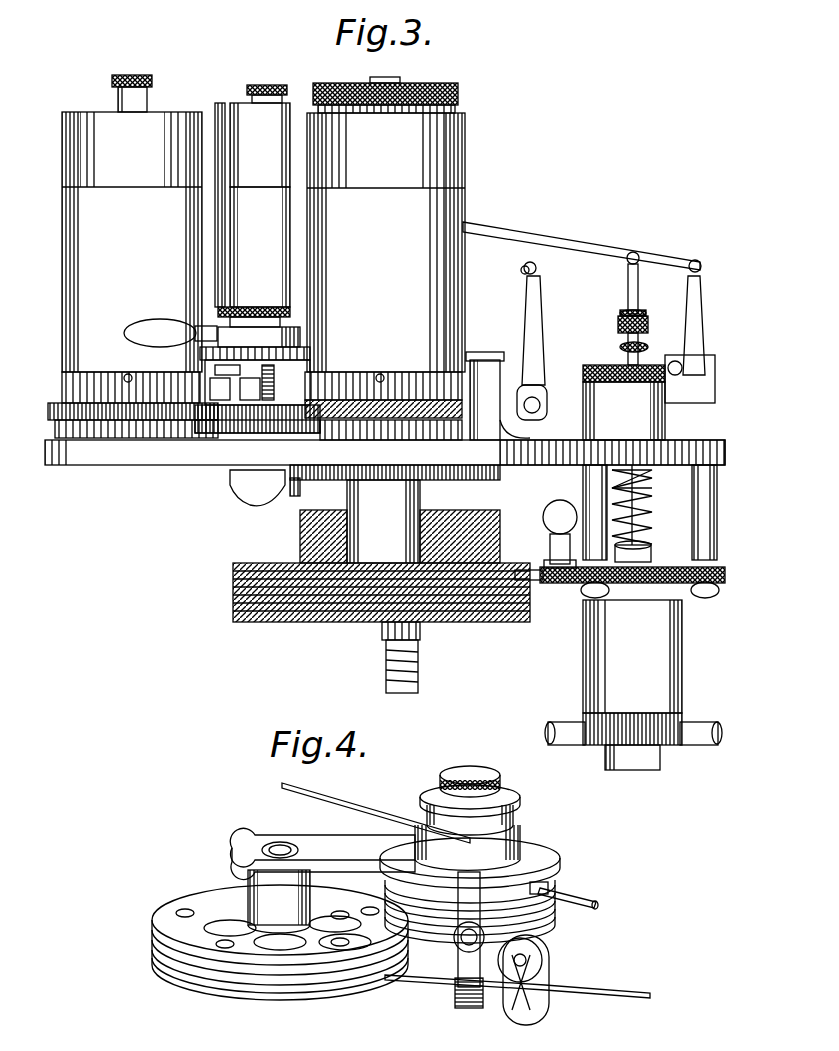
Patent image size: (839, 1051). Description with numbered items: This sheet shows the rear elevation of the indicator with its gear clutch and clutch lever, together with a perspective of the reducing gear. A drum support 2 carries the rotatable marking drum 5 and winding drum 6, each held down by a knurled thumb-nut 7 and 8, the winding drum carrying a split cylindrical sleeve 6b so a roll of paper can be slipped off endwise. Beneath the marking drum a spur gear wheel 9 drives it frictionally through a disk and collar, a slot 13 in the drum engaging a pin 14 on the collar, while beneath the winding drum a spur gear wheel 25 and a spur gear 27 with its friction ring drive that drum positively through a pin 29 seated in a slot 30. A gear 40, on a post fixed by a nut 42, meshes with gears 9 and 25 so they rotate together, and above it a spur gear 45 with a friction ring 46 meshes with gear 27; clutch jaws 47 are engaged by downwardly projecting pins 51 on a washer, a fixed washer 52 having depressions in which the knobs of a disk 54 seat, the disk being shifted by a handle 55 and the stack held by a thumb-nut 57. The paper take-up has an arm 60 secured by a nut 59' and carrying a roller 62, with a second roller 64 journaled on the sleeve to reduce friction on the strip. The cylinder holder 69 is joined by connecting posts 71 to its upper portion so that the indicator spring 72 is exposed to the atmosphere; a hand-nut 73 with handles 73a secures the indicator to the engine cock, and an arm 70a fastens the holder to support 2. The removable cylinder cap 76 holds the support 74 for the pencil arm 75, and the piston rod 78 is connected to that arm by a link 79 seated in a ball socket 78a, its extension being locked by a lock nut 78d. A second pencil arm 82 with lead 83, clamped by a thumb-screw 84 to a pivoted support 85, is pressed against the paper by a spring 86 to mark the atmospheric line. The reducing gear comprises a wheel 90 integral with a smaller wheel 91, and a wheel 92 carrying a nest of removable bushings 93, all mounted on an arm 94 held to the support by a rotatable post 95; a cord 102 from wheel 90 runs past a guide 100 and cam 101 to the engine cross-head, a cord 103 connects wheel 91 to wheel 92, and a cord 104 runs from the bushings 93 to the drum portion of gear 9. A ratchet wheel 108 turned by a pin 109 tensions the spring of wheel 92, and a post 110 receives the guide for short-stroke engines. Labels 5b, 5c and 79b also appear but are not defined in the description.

In FIG. 3, the support 2 is at (385, 452).
In FIG. 3, the marking drum 5 is at (386, 242).
In FIG. 3, the ring 5b is at (455, 108).
In FIG. 3, the knurled cap 5c is at (458, 92).
In FIG. 3, the winding drum 6 is at (72, 112).
In FIG. 3, the cylindrical sleeve 6b is at (115, 220).
In FIG. 3, the knurled thumb-nut 7 is at (390, 80).
In FIG. 3, the knurled thumb-nut 8 is at (152, 81).
In FIG. 3, the spur gear wheel 9 is at (391, 438).
In FIG. 3, the slot 13 is at (372, 385).
In FIG. 3, the pin 14 is at (380, 374).
In FIG. 3, the spur gear wheel 25 is at (55, 428).
In FIG. 3, the spur gear 27 is at (48, 410).
In FIG. 3, the pin 29 is at (128, 374).
In FIG. 3, the slot 30 is at (131, 387).
In FIG. 3, the gear 40 is at (220, 433).
In FIG. 3, the nut 42 is at (240, 490).
In FIG. 3, the spur gear 45 is at (192, 433).
In FIG. 3, the friction ring 46 is at (256, 391).
In FIG. 3, the clutch jaws 47 is at (230, 387).
In FIG. 3, the pins 51 is at (295, 364).
In FIG. 3, the flat washer 52 is at (310, 350).
In FIG. 3, the washer or disk 54 is at (300, 333).
In FIG. 3, the handle 55 is at (150, 326).
In FIG. 3, the thumb-nut 57 is at (254, 304).
In FIG. 3, the nut 59' is at (267, 78).
In FIG. 3, the arm 60 is at (222, 103).
In FIG. 3, the roller 62 is at (240, 205).
In FIG. 3, the roller 64 is at (260, 145).
In FIG. 3, the cylinder holder 69 is at (620, 668).
In FIG. 3, the arm 70a is at (612, 450).
In FIG. 3, the connecting posts 71 is at (717, 510).
In FIG. 3, the indicator spring 72 is at (652, 495).
In FIG. 3, the hand-nut 73 is at (604, 746).
In FIG. 3, the handles 73a is at (730, 737).
In FIG. 3, the support 74 is at (690, 403).
In FIG. 3, the pencil arm 75 is at (608, 248).
In FIG. 3, the cylinder cap 76 is at (598, 372).
In FIG. 3, the piston rod 78 is at (650, 515).
In FIG. 3, the ball socket 78a is at (618, 325).
In FIG. 3, the lock nut 78d is at (649, 349).
In FIG. 3, the link 79 is at (640, 305).
In FIG. 3, the disc 79b is at (617, 305).
In FIG. 3, the second pencil arm 82 is at (486, 344).
In FIG. 3, the lead 83 is at (475, 358).
In FIG. 3, the thumb-screw 84 is at (538, 358).
In FIG. 3, the support 85 is at (470, 395).
In FIG. 3, the spring 86 is at (527, 430).
In FIG. 3, the wheel 90 is at (258, 623).
In FIG. 4, the wheel 90 is at (272, 1000).
In FIG. 3, the smaller wheel 91 is at (383, 521).
In FIG. 4, the smaller wheel 91 is at (279, 901).
In FIG. 3, the wheel 92 is at (300, 550).
In FIG. 4, the wheel 92 is at (548, 927).
In FIG. 4, the nest of removable bushings 93 is at (520, 810).
In FIG. 4, the arm 94 is at (322, 853).
In FIG. 4, the rotatable post 95 is at (278, 845).
In FIG. 4, the guide 100 is at (510, 1016).
In FIG. 4, the cam 101 is at (545, 968).
In FIG. 4, the cord 102 is at (517, 987).
In FIG. 3, the cord 103 is at (305, 505).
In FIG. 4, the cord 103 is at (452, 925).
In FIG. 4, the cord 104 is at (360, 805).
In FIG. 3, the ratchet wheel 108 is at (290, 495).
In FIG. 4, the ratchet wheel 108 is at (556, 878).
In FIG. 4, the pin 109 is at (589, 901).
In FIG. 3, the post 110 is at (566, 510).